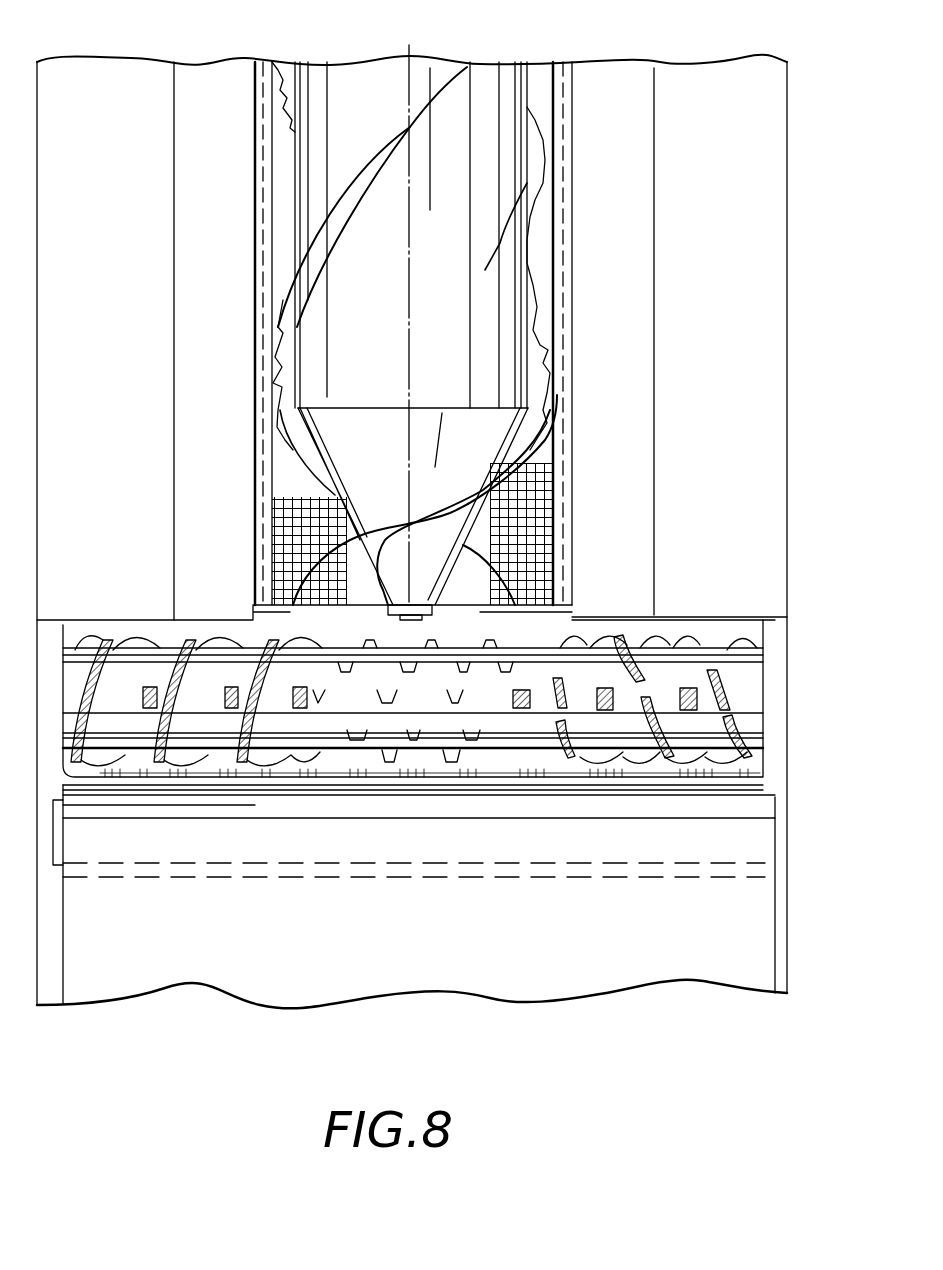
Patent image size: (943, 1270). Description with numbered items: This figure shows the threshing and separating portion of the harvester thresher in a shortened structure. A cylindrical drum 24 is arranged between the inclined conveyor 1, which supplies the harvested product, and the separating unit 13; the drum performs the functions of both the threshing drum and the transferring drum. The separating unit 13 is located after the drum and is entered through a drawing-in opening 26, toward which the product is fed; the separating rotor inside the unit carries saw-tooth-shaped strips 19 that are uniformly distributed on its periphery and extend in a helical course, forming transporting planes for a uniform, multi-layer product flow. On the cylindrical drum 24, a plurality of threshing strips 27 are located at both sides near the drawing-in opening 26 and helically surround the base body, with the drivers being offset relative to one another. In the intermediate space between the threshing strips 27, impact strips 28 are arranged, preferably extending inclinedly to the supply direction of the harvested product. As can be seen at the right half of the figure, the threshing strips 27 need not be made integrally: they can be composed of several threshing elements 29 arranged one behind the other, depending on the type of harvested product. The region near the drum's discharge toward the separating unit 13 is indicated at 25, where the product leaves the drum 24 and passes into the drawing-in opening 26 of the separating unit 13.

The inclined conveyor 1 is at (742, 970).
The separating unit 13 is at (577, 360).
The saw-tooth-shaped strips 19 is at (420, 407).
The cylindrical drum 24 is at (752, 697).
The discharge outlet 25 is at (455, 613).
The drawing-in opening 26 is at (457, 660).
The threshing strips 27 is at (205, 765).
The impact strips 28 is at (230, 688).
The threshing elements 29 is at (635, 663).